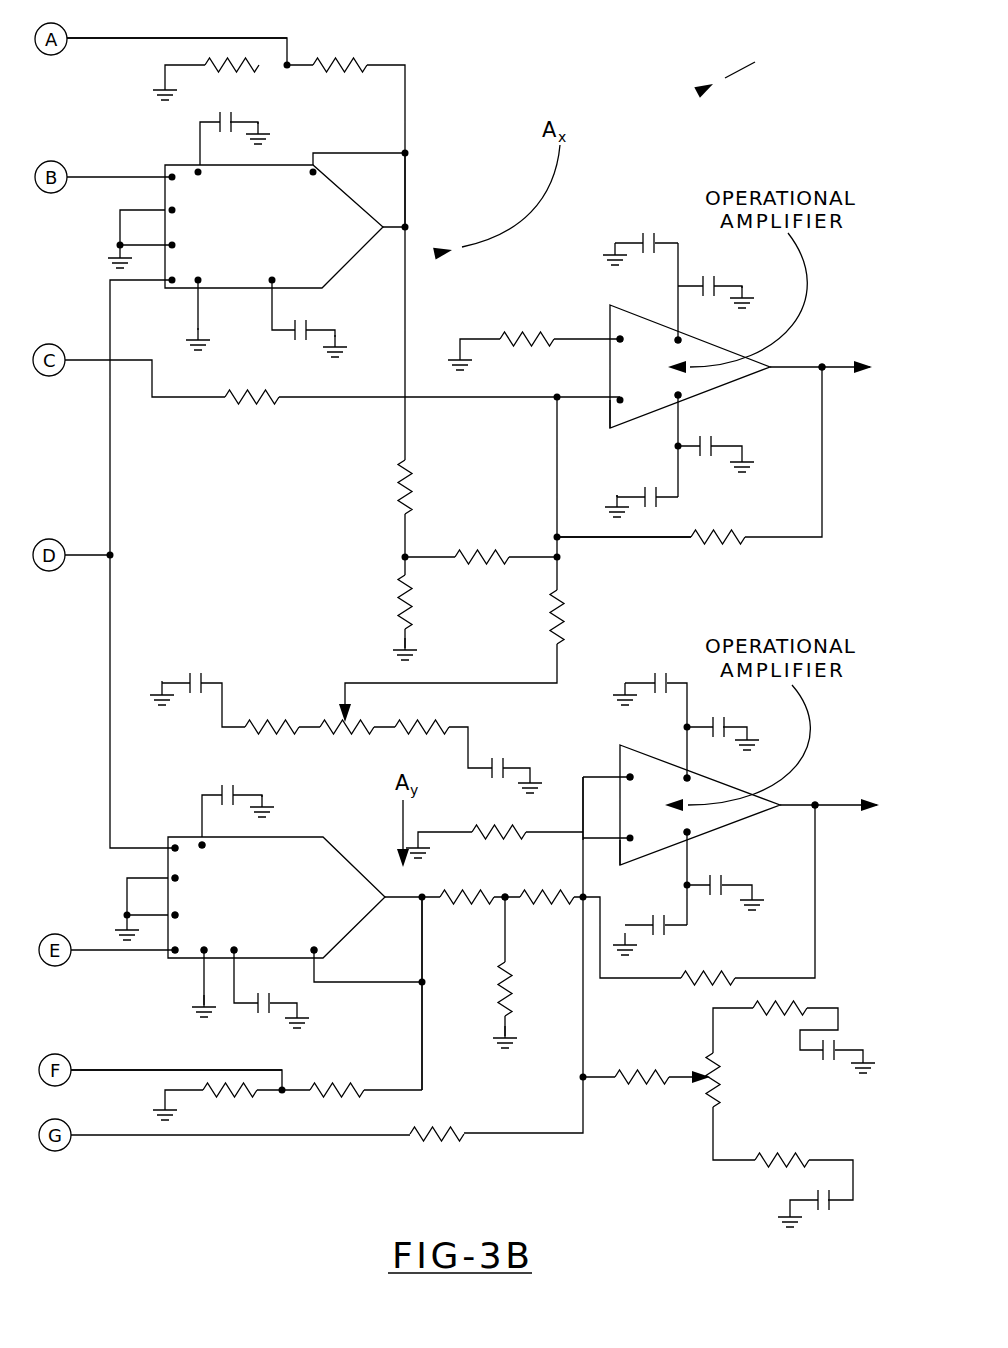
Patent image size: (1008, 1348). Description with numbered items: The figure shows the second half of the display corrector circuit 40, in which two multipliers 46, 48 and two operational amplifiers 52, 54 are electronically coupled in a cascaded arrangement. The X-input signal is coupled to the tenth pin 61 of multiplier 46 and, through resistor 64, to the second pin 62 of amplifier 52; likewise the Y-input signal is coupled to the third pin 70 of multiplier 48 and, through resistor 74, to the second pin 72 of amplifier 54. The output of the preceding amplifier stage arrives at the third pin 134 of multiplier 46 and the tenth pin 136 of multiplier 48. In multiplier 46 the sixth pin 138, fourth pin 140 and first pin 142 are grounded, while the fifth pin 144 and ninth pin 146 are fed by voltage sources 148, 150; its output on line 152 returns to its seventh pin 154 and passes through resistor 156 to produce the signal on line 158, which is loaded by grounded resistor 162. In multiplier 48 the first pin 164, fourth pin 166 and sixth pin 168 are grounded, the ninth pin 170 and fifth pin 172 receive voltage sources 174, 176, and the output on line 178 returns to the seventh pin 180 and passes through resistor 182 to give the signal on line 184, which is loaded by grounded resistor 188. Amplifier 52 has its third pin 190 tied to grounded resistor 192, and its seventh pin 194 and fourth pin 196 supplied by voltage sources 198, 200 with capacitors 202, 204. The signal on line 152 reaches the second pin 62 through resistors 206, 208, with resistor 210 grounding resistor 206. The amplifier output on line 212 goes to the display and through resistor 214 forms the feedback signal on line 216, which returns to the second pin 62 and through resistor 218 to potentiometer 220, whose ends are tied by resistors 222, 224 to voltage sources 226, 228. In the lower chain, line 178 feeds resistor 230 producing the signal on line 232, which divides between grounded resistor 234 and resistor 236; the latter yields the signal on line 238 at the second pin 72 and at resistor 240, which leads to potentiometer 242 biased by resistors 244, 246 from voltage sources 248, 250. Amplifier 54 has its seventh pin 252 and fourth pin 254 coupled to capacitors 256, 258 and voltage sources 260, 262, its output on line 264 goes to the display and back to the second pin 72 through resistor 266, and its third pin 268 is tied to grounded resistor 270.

The display corrector circuit 40 is at (744, 63).
The multiplier 46 is at (358, 228).
The multiplier 48 is at (360, 870).
The operational amplifier 52 is at (745, 365).
The operational amplifier 54 is at (622, 805).
The tenth pin of multiplier 46 61 is at (178, 170).
The second pin of amplifier 52 62 is at (608, 393).
The resistor 64 is at (248, 402).
The third pin of multiplier 48 70 is at (176, 955).
The second pin of amplifier 54 72 is at (622, 850).
The resistor 74 is at (432, 1125).
The third pin of multiplier 46 134 is at (175, 283).
The tenth pin of multiplier 48 136 is at (178, 835).
The sixth pin of multiplier 46 138 is at (200, 281).
The fourth pin of multiplier 46 140 is at (175, 247).
The first pin of multiplier 46 142 is at (172, 208).
The fifth pin of multiplier 46 144 is at (273, 278).
The ninth pin of multiplier 46 146 is at (200, 176).
The voltage source 148 is at (303, 338).
The voltage source 150 is at (227, 112).
The line 152 is at (408, 168).
The seventh pin of multiplier 46 154 is at (317, 173).
The resistor 156 is at (350, 68).
The line 158 is at (282, 36).
The resistor 162 is at (208, 58).
The first pin of multiplier 48 164 is at (173, 880).
The fourth pin of multiplier 48 166 is at (177, 916).
The sixth pin of multiplier 48 168 is at (203, 956).
The ninth pin of multiplier 48 170 is at (205, 848).
The fifth pin of multiplier 48 172 is at (262, 942).
The voltage source 174 is at (228, 785).
The voltage source 176 is at (259, 1013).
The line 178 is at (424, 912).
The seventh pin of multiplier 48 180 is at (318, 945).
The resistor 182 is at (330, 1082).
The line 184 is at (122, 1068).
The resistor 188 is at (228, 1095).
The third pin of amplifier 52 190 is at (615, 337).
The resistor 192 is at (513, 333).
The seventh pin of amplifier 52 194 is at (675, 341).
The fourth pin of amplifier 52 196 is at (676, 396).
The voltage source 198 is at (648, 235).
The voltage source 200 is at (662, 512).
The capacitor 202 is at (704, 278).
The capacitor 204 is at (702, 440).
The resistor 206 is at (412, 483).
The resistor 208 is at (472, 550).
The resistor 210 is at (410, 590).
The line 212 is at (803, 366).
The resistor 214 is at (715, 545).
The line 216 is at (665, 540).
The resistor 218 is at (563, 628).
The potentiometer 220 is at (348, 729).
The resistor 222 is at (262, 720).
The resistor 224 is at (422, 712).
The voltage source 226 is at (190, 673).
The voltage source 228 is at (500, 755).
The resistor 230 is at (460, 868).
The line 232 is at (508, 905).
The resistor 234 is at (508, 980).
The resistor 236 is at (525, 890).
The line 238 is at (583, 780).
The resistor 240 is at (648, 1082).
The potentiometer 242 is at (723, 1090).
The resistor 244 is at (765, 1015).
The resistor 246 is at (775, 1150).
The voltage source 248 is at (832, 1043).
The voltage source 250 is at (826, 1212).
The seventh pin of amplifier 54 252 is at (692, 777).
The fourth pin of amplifier 54 254 is at (692, 833).
The capacitor 256 is at (715, 720).
The capacitor 258 is at (716, 893).
The voltage source 260 is at (660, 674).
The voltage source 262 is at (660, 927).
The line 264 is at (790, 803).
The resistor 266 is at (707, 982).
The third pin of amplifier 54 268 is at (633, 777).
The resistor 270 is at (503, 825).